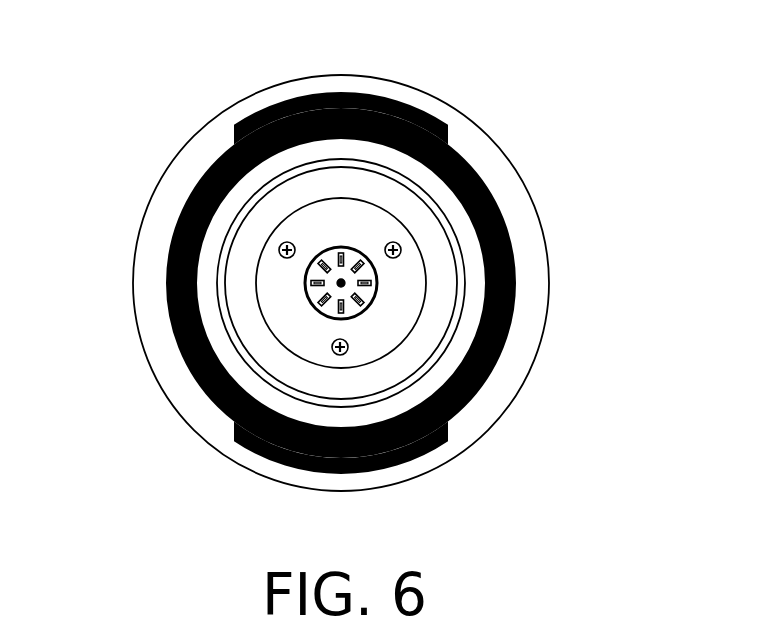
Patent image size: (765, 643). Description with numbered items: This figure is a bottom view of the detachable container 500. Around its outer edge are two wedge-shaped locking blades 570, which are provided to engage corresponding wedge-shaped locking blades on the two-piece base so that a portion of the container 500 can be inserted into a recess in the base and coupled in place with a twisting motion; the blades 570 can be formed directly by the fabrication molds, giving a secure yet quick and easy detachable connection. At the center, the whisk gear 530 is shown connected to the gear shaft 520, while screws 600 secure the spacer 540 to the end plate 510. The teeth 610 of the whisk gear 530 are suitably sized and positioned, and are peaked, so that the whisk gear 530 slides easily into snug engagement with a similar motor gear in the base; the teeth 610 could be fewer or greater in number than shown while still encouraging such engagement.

The detachable container 500 is at (272, 42).
The end plate 510 is at (462, 343).
The gear shaft 520 is at (341, 283).
The whisk gear 530 is at (306, 270).
The spacer 540 is at (428, 283).
The wedge-shaped locking blades 570 is at (447, 137).
The screws 600 is at (336, 352).
The teeth 610 is at (306, 301).